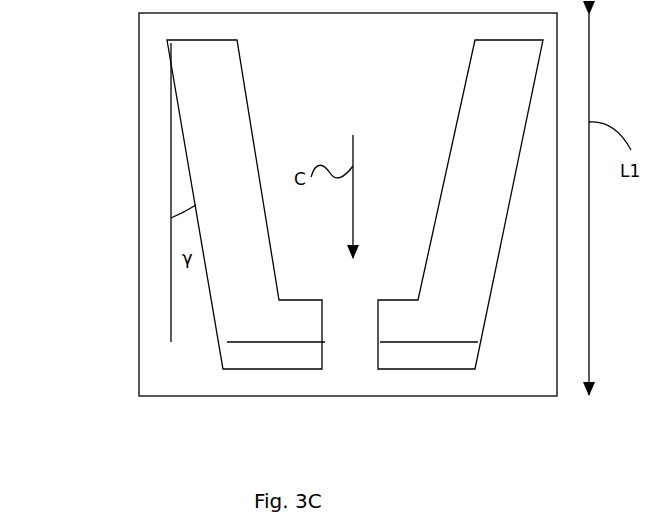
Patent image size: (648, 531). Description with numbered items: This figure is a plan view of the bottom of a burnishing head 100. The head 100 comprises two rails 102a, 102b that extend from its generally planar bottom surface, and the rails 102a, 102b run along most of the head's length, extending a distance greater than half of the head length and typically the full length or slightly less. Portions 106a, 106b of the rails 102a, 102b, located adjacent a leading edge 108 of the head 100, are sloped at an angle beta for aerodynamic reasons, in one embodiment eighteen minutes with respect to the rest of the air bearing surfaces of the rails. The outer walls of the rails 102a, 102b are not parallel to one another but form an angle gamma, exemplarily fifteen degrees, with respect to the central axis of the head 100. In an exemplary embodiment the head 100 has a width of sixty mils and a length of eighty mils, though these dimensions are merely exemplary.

The burnishing head 100 is at (128, 178).
The rail 102a is at (265, 178).
The rail 102b is at (462, 118).
The portion of rail 106a is at (270, 371).
The portion of rail 106b is at (408, 371).
The leading edge 108 is at (450, 396).